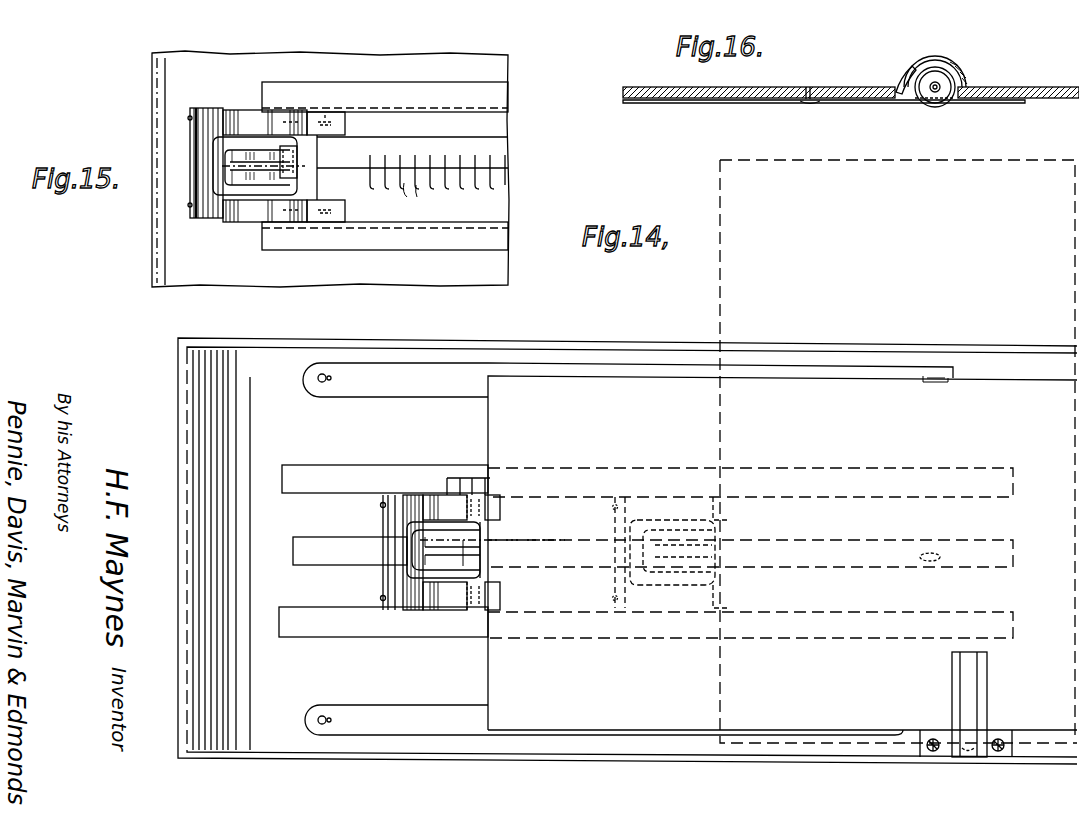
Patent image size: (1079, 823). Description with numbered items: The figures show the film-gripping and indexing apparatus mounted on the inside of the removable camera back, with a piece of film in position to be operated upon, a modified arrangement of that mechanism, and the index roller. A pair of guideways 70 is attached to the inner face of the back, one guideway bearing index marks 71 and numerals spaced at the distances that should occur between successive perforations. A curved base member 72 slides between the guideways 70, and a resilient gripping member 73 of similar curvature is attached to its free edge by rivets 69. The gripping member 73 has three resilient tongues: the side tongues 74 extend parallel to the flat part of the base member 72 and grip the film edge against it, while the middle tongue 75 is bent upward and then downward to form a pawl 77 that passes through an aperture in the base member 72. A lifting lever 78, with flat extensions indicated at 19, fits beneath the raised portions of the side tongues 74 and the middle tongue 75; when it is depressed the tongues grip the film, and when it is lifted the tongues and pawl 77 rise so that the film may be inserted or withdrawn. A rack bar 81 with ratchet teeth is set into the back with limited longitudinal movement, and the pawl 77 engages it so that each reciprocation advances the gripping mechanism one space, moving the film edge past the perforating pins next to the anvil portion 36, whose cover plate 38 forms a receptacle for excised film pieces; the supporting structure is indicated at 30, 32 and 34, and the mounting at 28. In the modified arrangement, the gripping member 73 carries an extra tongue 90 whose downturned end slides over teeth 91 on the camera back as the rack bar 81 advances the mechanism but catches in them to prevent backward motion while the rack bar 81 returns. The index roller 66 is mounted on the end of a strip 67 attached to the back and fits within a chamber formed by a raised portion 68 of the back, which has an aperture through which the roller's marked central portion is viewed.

In FIG. 14, the spring 19 is at (483, 527).
In FIG. 15, the panel / door 28 is at (493, 132).
In FIG. 16, the panel / door 28 is at (1033, 88).
In FIG. 14, the panel / door 28 is at (282, 332).
In FIG. 14, the position mark 30 is at (469, 481).
In FIG. 14, the housing 32 is at (473, 481).
In FIG. 14, the supporting member 34 is at (461, 481).
In FIG. 14, the anvil portion 36 is at (1008, 693).
In FIG. 14, the cover plate 38 is at (968, 677).
In FIG. 16, the roller 66 is at (957, 64).
In FIG. 16, the strip 67 is at (697, 103).
In FIG. 14, the strip 67 is at (461, 712).
In FIG. 16, the raised portion 68 is at (902, 83).
In FIG. 15, the rivets 69 is at (190, 204).
In FIG. 15, the guideways 70 is at (325, 94).
In FIG. 14, the guideways 70 is at (376, 470).
In FIG. 14, the index marks 71 is at (485, 496).
In FIG. 15, the base member 72 is at (310, 148).
In FIG. 14, the base member 72 is at (382, 523).
In FIG. 15, the gripping member 73 is at (222, 208).
In FIG. 14, the gripping member 73 is at (410, 497).
In FIG. 15, the side tongues 74 is at (305, 123).
In FIG. 14, the side tongues 74 is at (498, 512).
In FIG. 15, the middle tongue 75 is at (250, 152).
In FIG. 14, the middle tongue 75 is at (452, 552).
In FIG. 14, the pawl 77 is at (463, 545).
In FIG. 14, the lifting lever 78 is at (423, 530).
In FIG. 15, the rack bar 81 is at (477, 167).
In FIG. 14, the rack bar 81 is at (787, 542).
In FIG. 15, the extra tongue 90 is at (284, 173).
In FIG. 15, the teeth 91 is at (404, 187).